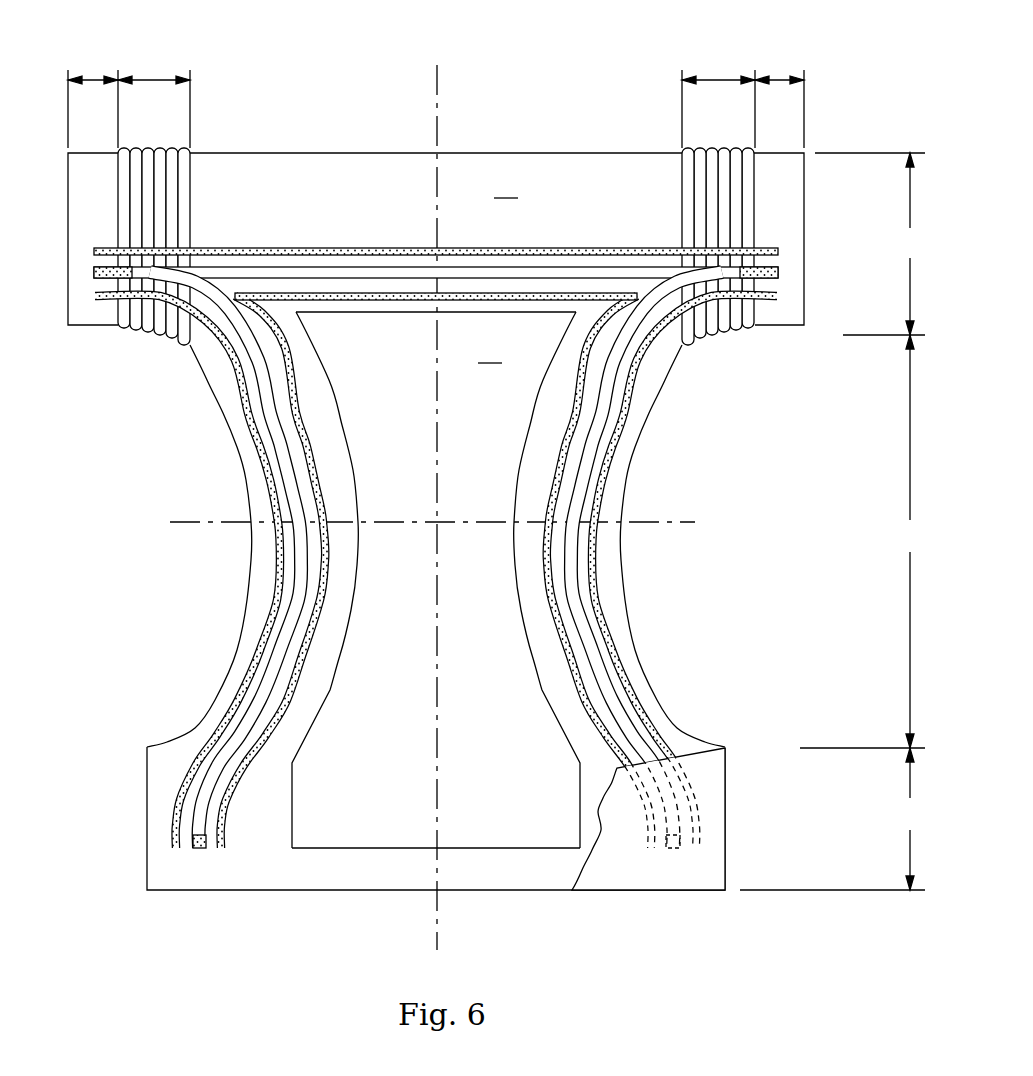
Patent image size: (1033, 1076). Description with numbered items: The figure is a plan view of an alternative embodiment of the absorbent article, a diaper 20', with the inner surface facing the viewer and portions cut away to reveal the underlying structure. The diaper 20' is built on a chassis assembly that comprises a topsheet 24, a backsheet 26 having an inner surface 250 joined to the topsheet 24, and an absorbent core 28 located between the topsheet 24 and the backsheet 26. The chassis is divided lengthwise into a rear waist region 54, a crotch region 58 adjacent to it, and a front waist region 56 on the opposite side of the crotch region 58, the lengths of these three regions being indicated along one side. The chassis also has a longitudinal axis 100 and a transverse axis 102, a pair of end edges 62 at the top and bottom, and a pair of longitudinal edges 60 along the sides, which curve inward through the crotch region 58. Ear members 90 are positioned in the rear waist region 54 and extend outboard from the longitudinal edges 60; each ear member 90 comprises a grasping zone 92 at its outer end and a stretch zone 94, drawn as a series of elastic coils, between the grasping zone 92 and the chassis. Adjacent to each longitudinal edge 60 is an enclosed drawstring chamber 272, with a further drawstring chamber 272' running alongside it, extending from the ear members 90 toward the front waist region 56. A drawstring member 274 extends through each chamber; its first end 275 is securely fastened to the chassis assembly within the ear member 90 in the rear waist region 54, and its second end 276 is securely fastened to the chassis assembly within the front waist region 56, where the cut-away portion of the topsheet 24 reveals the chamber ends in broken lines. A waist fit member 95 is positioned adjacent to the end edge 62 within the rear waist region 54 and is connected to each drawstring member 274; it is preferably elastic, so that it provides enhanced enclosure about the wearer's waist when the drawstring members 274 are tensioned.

The diaper 20' is at (443, 507).
The topsheet 24 is at (708, 780).
The backsheet 26 is at (436, 175).
The absorbent core 28 is at (436, 580).
The rear waist region 54 is at (870, 244).
The front waist region 56 is at (832, 819).
The crotch region 58 is at (862, 541).
The longitudinal edges 60 is at (243, 652).
The end edges 62 is at (443, 528).
The ear members 90 is at (106, 212).
The grasping zone 92 is at (93, 76).
The stretch zone 94 is at (153, 78).
The waist fit member 95 is at (372, 272).
The longitudinal axis 100 is at (443, 493).
The transverse axis 102 is at (458, 522).
The inner surface 250 is at (388, 178).
The drawstring chamber 272 is at (436, 615).
The drawstring chamber 272' is at (436, 571).
The drawstring member 274 is at (300, 620).
The first end 275 is at (778, 270).
The second end 276 is at (196, 850).